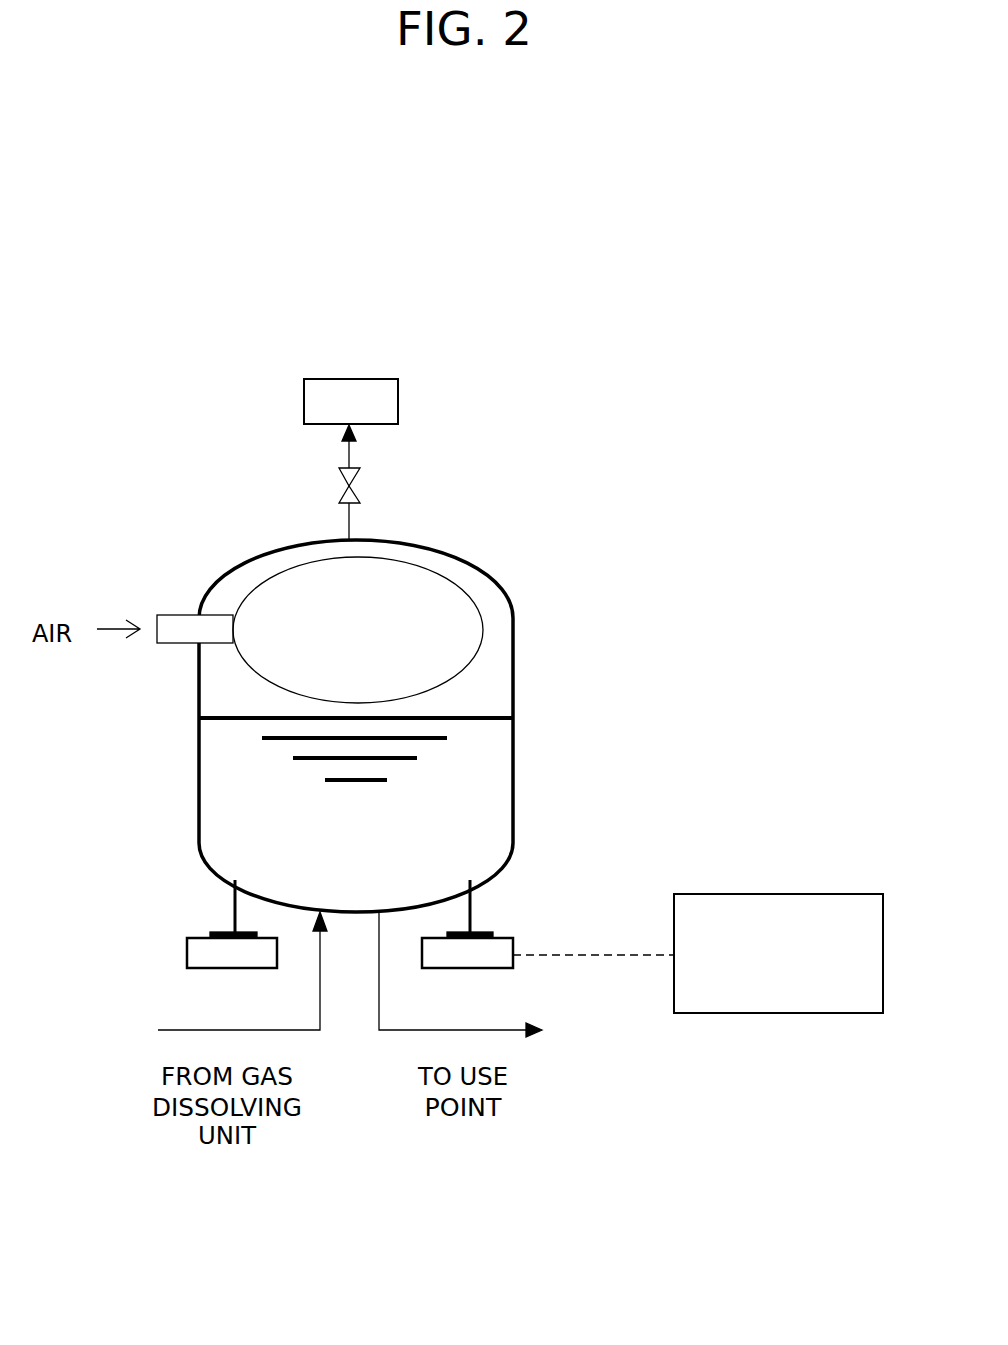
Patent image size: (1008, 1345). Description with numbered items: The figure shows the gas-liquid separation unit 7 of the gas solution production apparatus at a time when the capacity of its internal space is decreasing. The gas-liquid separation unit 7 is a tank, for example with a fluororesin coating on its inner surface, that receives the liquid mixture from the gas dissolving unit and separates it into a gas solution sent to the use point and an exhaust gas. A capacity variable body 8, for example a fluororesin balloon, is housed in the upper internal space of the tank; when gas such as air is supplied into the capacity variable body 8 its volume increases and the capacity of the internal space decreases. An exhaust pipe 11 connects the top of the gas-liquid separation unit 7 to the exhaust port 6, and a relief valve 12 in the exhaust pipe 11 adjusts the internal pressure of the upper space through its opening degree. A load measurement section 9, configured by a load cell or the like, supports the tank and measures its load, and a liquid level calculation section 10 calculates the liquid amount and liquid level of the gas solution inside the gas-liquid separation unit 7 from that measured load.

The exhaust port 6 is at (382, 379).
The gas-liquid separation unit 7 is at (452, 556).
The capacity variable body 8 is at (482, 610).
The load measurement section 9 is at (203, 938).
The liquid level calculation section 10 is at (803, 894).
The exhaust pipe 11 is at (349, 521).
The relief valve 12 is at (355, 495).